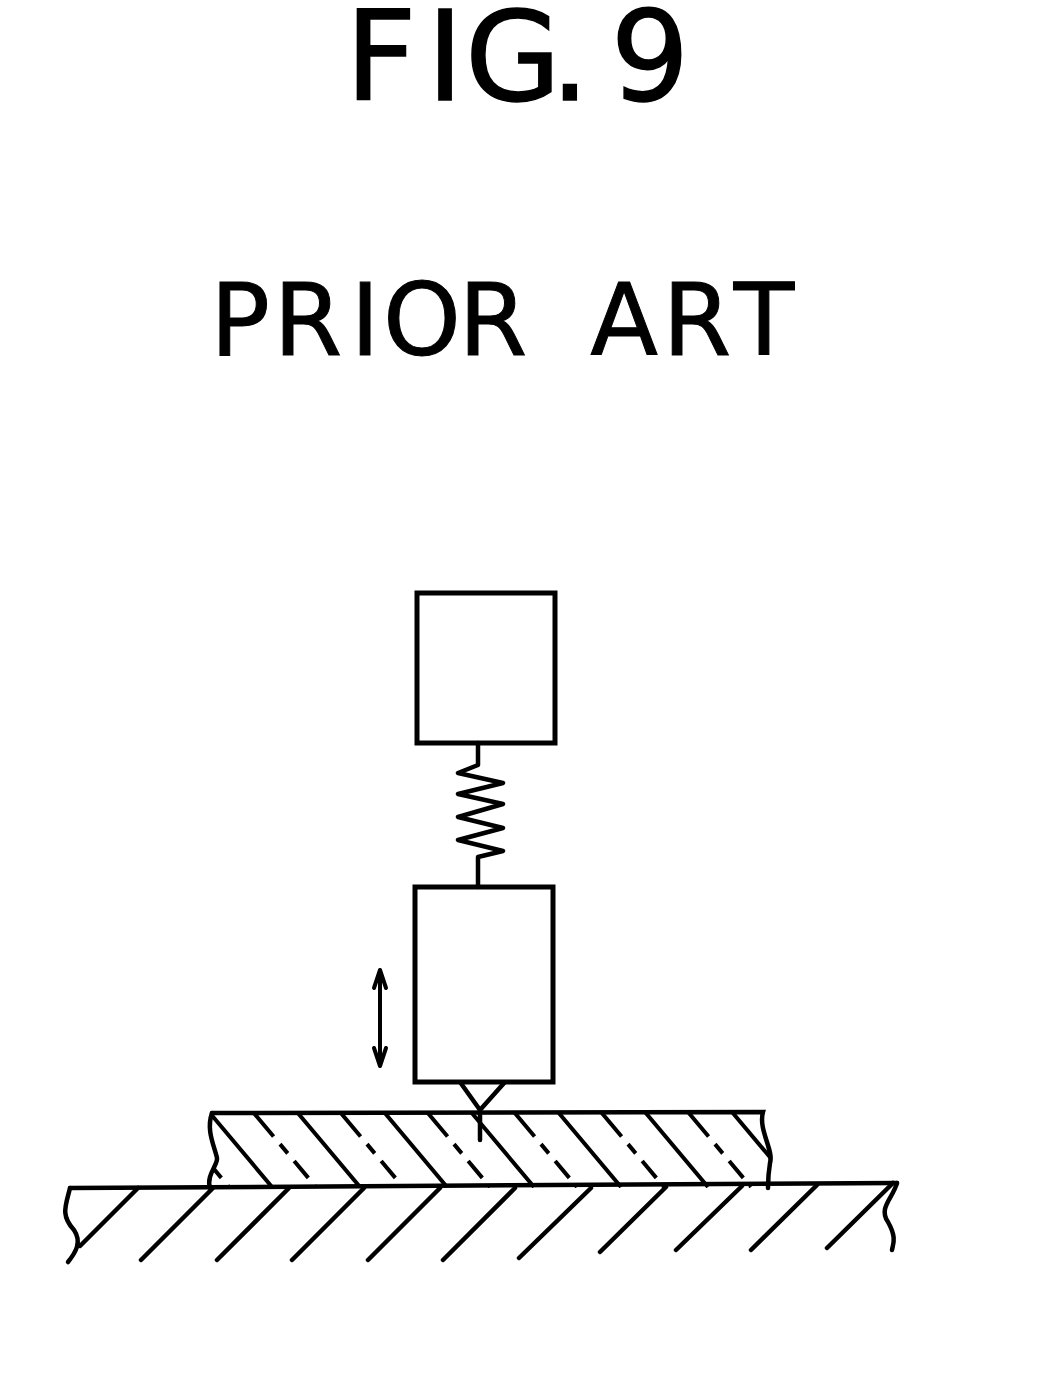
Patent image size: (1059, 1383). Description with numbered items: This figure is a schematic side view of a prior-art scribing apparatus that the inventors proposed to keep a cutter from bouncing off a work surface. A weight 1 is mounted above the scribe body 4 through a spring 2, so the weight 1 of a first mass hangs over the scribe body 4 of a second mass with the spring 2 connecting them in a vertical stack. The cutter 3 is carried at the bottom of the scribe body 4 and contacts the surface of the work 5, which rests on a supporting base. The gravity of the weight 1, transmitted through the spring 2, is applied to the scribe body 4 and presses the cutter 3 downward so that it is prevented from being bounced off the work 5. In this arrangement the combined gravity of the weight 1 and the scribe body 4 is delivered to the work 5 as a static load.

The weight 1 is at (555, 668).
The spring 2 is at (500, 801).
The cutter 3 is at (483, 1100).
The scribe body 4 is at (553, 945).
The work 5 is at (763, 1112).